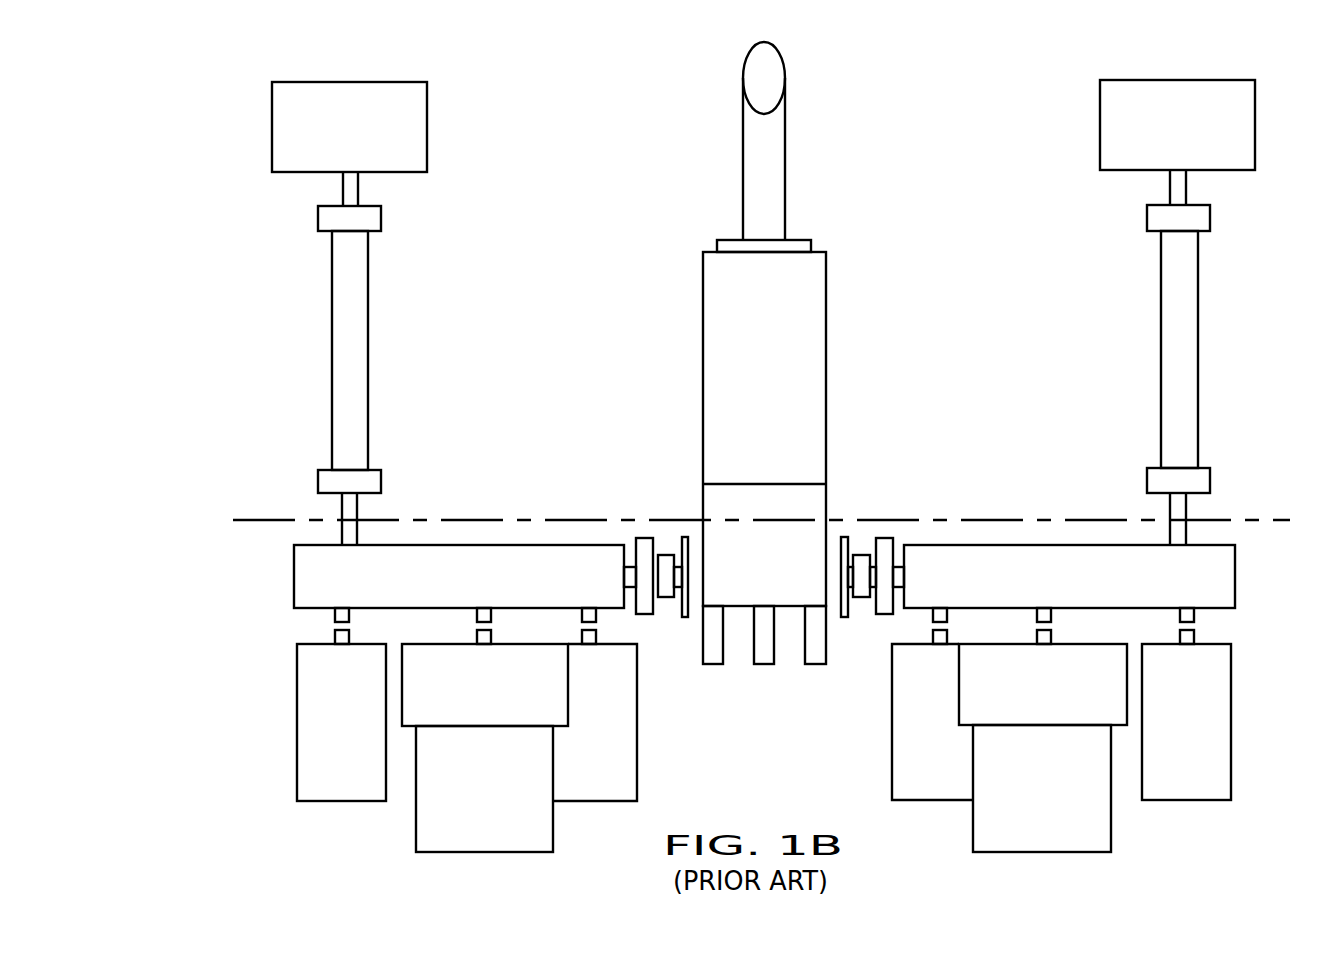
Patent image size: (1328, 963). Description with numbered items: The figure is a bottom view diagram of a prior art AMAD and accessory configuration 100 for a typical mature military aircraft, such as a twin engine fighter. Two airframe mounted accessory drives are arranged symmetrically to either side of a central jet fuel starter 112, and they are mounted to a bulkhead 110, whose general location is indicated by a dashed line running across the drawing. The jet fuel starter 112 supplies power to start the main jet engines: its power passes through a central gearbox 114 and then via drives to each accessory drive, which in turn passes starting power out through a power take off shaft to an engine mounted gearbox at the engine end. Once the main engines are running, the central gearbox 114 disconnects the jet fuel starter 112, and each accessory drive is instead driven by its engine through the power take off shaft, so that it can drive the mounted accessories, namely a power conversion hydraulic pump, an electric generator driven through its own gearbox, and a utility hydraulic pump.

The AMAD and accessory configuration 100 is at (242, 82).
The bulkhead 110 is at (518, 518).
The jet fuel starter 112 is at (722, 320).
The central gearbox 114 is at (806, 505).